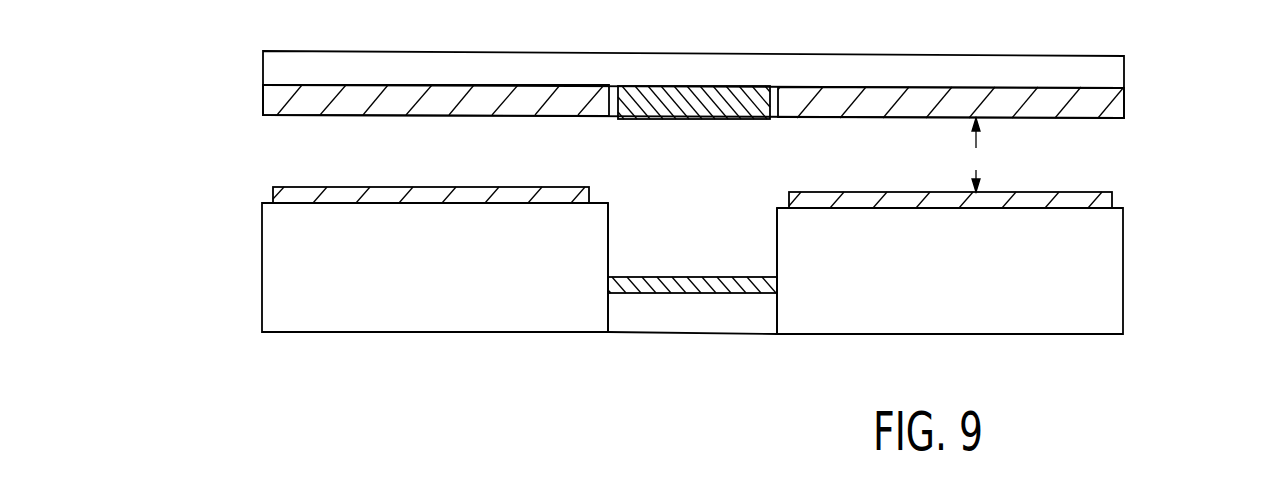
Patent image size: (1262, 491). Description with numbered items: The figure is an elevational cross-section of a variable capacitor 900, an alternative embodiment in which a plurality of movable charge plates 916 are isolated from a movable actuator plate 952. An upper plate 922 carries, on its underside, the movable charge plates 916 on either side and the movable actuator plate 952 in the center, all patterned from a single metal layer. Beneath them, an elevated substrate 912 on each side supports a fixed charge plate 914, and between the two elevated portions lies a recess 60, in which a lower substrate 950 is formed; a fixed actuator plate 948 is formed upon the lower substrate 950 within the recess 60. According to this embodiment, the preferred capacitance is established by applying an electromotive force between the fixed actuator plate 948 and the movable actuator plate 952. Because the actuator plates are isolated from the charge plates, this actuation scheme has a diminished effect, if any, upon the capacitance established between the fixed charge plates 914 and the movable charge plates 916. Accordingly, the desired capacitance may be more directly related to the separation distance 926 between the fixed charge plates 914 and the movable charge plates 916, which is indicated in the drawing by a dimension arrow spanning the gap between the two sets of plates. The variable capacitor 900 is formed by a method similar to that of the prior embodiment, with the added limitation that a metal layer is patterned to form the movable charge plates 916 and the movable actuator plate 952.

The variable capacitor 900 is at (216, 37).
The cover plate 922 is at (1117, 65).
The movable charge plates 916 is at (263, 105).
The movable actuator plate 952 is at (710, 119).
The separation distance 926 is at (975, 155).
The fixed charge plates 914 is at (273, 201).
The substrate 912 is at (392, 283).
The fixed actuator plate 948 is at (663, 277).
The cavity 950 is at (747, 310).
The recess 60 is at (635, 255).